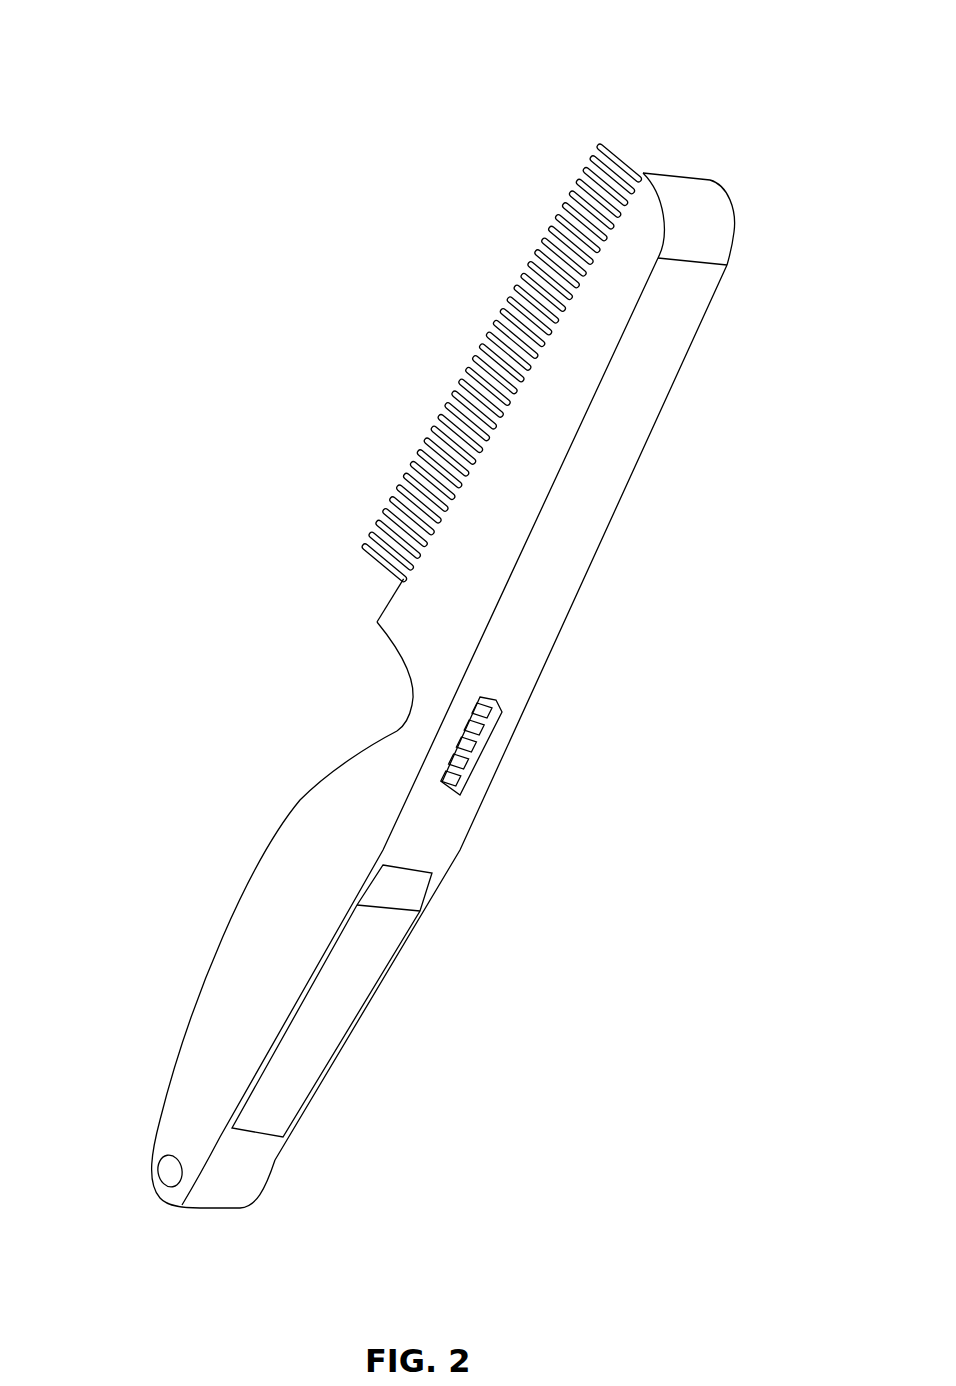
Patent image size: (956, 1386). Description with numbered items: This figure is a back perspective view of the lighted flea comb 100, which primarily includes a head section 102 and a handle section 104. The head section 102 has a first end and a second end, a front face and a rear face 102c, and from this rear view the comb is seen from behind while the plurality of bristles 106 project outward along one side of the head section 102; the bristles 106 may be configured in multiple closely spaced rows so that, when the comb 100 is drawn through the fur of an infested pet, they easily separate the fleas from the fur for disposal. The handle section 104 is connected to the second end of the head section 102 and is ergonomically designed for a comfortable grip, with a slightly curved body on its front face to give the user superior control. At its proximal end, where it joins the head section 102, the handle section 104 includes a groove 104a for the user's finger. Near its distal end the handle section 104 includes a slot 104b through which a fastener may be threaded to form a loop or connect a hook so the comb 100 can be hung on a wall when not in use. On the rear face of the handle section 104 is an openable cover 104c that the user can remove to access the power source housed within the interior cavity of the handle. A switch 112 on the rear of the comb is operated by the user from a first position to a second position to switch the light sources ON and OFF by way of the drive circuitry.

The flea comb 100 is at (655, 78).
The head section 102 is at (653, 424).
The rear face 102c is at (565, 540).
The handle section 104 is at (255, 1160).
The groove 104a is at (398, 730).
The slot 104b is at (166, 1170).
The openable cover 104c is at (327, 1035).
The bristles 106 is at (420, 465).
The switch 112 is at (470, 760).